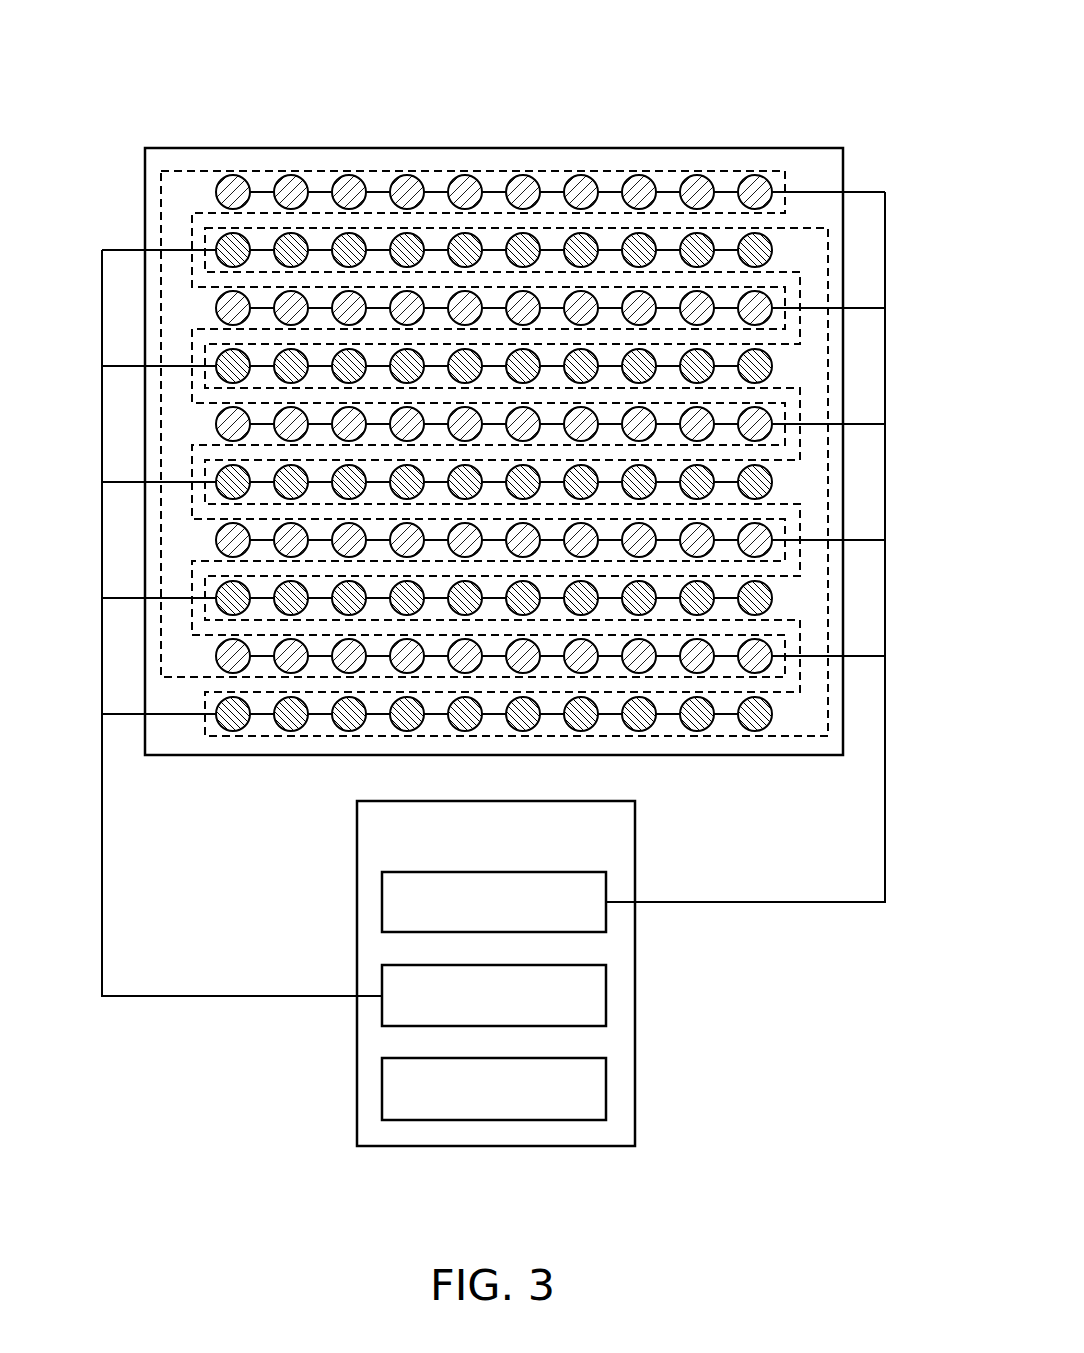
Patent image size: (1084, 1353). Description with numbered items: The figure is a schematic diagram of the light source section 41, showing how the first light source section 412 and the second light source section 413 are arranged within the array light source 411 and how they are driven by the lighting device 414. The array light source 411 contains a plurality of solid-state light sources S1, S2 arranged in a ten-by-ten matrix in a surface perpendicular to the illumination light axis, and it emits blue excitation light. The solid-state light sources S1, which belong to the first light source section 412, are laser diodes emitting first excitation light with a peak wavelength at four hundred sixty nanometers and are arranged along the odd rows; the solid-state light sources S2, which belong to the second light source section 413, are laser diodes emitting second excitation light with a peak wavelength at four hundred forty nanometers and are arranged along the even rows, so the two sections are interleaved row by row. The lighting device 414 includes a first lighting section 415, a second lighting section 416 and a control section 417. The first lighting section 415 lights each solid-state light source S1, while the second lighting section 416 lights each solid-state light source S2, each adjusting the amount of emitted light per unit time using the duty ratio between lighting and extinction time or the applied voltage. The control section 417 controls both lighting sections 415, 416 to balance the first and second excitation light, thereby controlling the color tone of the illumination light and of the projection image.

The light source section 41 is at (849, 71).
The array light source 411 is at (772, 148).
The first light source section 412 is at (201, 170).
The second light source section 413 is at (800, 740).
The lighting device 414 is at (636, 822).
The first lighting section 415 is at (548, 872).
The second lighting section 416 is at (548, 965).
The control section 417 is at (548, 1058).
The solid-state light source S1 is at (233, 177).
The solid-state light source S2 is at (216, 723).